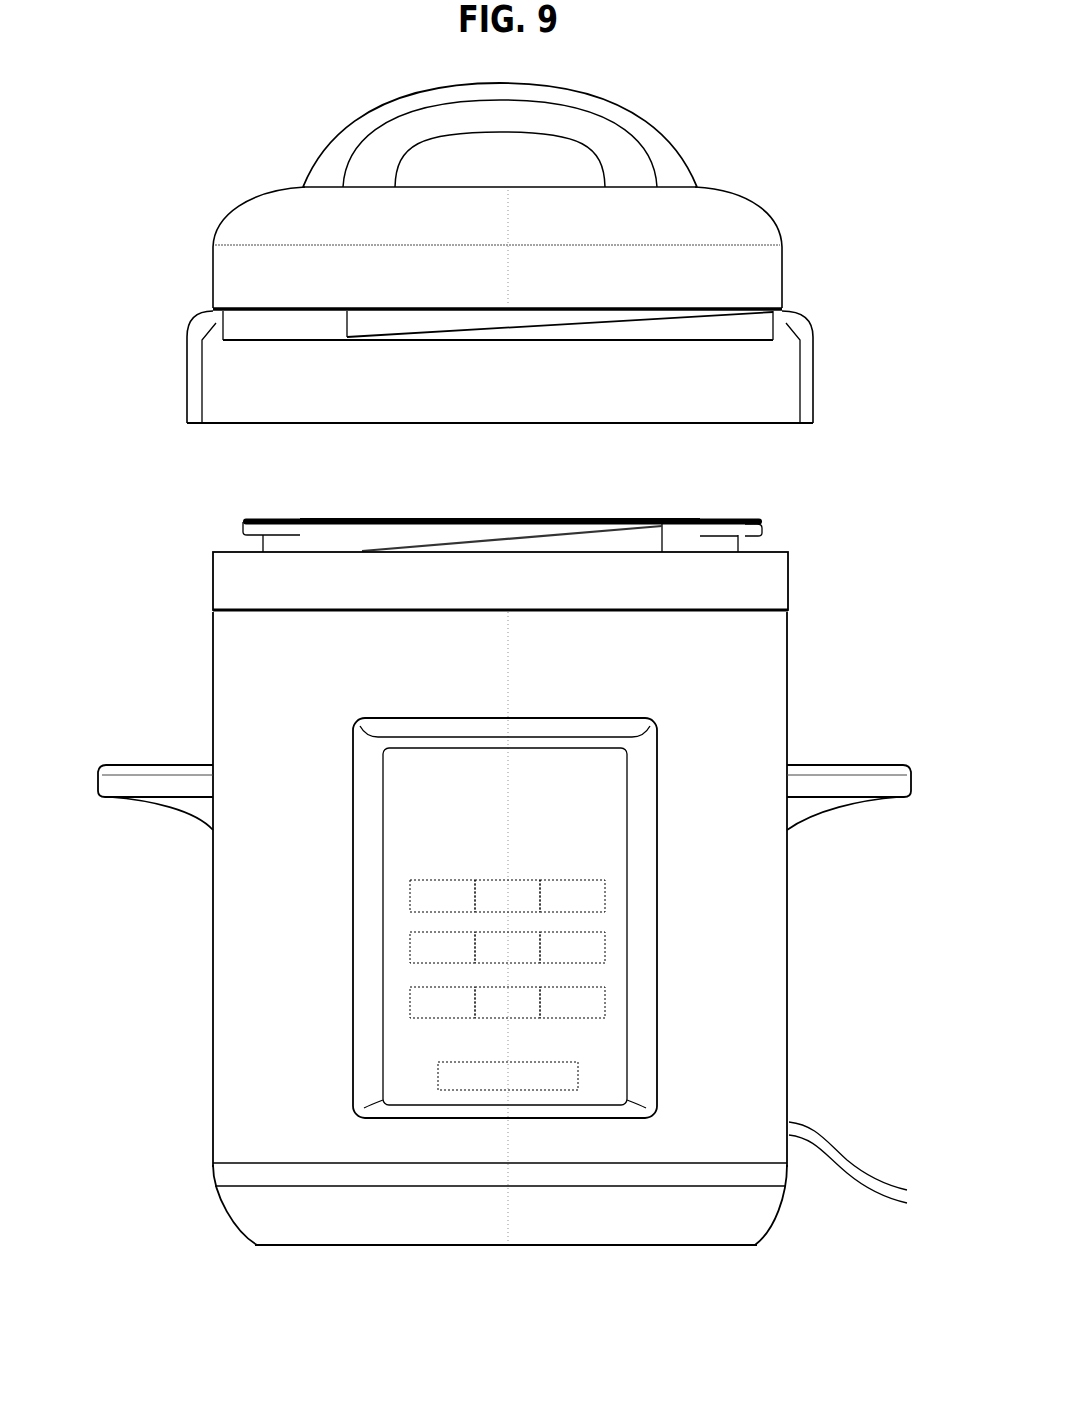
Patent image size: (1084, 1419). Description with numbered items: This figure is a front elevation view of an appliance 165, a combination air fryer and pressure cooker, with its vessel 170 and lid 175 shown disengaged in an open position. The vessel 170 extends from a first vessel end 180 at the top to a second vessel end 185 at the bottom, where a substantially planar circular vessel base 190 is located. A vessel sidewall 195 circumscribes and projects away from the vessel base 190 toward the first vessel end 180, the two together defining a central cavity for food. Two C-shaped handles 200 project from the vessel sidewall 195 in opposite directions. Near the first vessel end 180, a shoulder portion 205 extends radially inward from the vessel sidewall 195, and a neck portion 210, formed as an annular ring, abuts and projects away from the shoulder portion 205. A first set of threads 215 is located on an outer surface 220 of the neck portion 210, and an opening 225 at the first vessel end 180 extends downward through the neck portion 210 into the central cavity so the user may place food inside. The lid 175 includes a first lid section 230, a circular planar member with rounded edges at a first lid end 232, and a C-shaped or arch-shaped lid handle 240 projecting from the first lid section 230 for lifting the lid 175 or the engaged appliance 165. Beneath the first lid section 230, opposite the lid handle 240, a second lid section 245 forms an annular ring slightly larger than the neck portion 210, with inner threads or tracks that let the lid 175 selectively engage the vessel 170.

The appliance 165 is at (511, 253).
The vessel 170 is at (505, 892).
The lid 175 is at (810, 306).
The first vessel end 180 is at (236, 513).
The second vessel end 185 is at (236, 1232).
The vessel base 190 is at (665, 1247).
The vessel sidewall 195 is at (212, 966).
The handle 200 is at (118, 778).
The shoulder portion 205 is at (220, 552).
The neck portion 210 is at (760, 522).
The first set of threads 215 is at (486, 538).
The outer surface 220 is at (728, 540).
The opening 225 is at (410, 512).
The first lid section 230 is at (218, 224).
The first lid end 232 is at (272, 178).
The lid handle 240 is at (352, 136).
The second lid section 245 is at (216, 324).